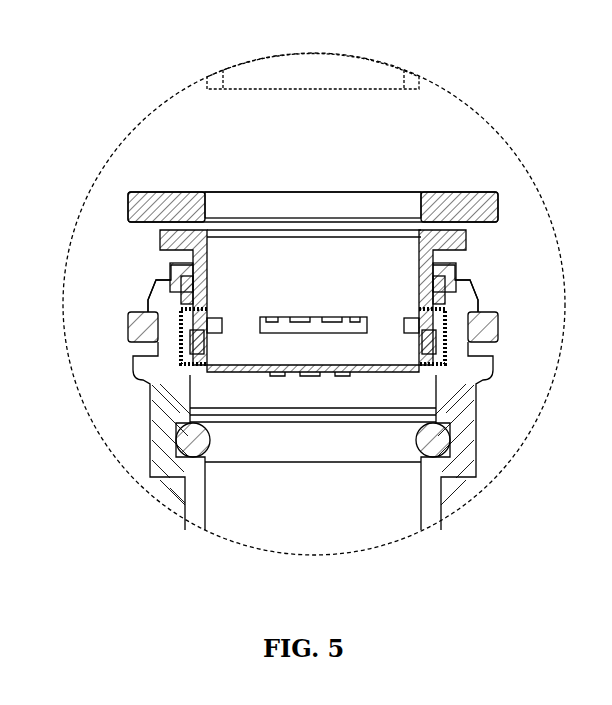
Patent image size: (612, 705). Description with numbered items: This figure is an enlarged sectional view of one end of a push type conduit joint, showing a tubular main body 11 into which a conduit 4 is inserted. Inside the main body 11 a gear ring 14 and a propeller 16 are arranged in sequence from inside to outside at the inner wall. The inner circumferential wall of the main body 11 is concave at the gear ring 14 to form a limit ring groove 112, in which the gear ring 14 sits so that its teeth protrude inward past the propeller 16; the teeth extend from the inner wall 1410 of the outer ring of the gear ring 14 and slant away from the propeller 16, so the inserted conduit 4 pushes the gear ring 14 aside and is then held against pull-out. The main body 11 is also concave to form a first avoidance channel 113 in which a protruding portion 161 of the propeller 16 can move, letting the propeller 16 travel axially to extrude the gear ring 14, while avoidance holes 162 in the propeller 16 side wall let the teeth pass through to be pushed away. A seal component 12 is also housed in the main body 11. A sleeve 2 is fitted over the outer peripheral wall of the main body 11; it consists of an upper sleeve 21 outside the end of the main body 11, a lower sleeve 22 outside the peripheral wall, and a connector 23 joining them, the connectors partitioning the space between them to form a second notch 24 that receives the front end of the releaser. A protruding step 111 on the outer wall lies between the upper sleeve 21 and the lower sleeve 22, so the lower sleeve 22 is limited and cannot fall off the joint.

The sleeve 2 is at (261, 191).
The conduit 4 is at (345, 72).
The main body 11 is at (466, 469).
The seal component 12 is at (448, 437).
The gear ring 14 is at (470, 328).
The propeller 16 is at (160, 243).
The upper sleeve 21 is at (128, 205).
The lower sleeve 22 is at (130, 326).
The connector 23 is at (327, 220).
The second notch 24 is at (163, 226).
The step 111 is at (472, 312).
The limit ring groove 112 is at (438, 344).
The first avoidance channel 113 is at (432, 290).
The protruding portion 161 is at (172, 283).
The avoidance hole 162 is at (267, 333).
The inner wall of the outer ring 1410 is at (180, 340).